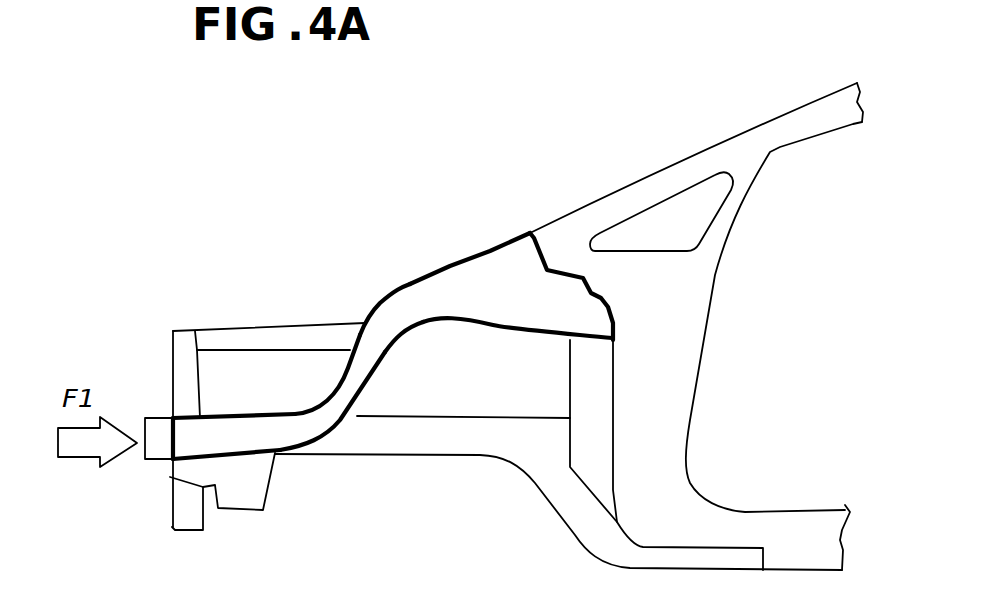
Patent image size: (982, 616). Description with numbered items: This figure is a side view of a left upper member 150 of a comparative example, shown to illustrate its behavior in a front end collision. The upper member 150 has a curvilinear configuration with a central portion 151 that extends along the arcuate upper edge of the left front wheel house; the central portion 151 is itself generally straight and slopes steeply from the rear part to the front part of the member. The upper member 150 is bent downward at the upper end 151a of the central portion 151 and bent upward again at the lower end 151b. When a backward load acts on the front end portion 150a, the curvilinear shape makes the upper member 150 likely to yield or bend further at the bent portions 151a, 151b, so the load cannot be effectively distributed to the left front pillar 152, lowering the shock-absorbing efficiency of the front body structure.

The left upper member 150 is at (351, 336).
The front end portion 150a is at (187, 428).
The central portion 151 is at (332, 367).
The upper end 151a is at (401, 304).
The lower end 151b is at (320, 427).
The left front pillar 152 is at (590, 210).